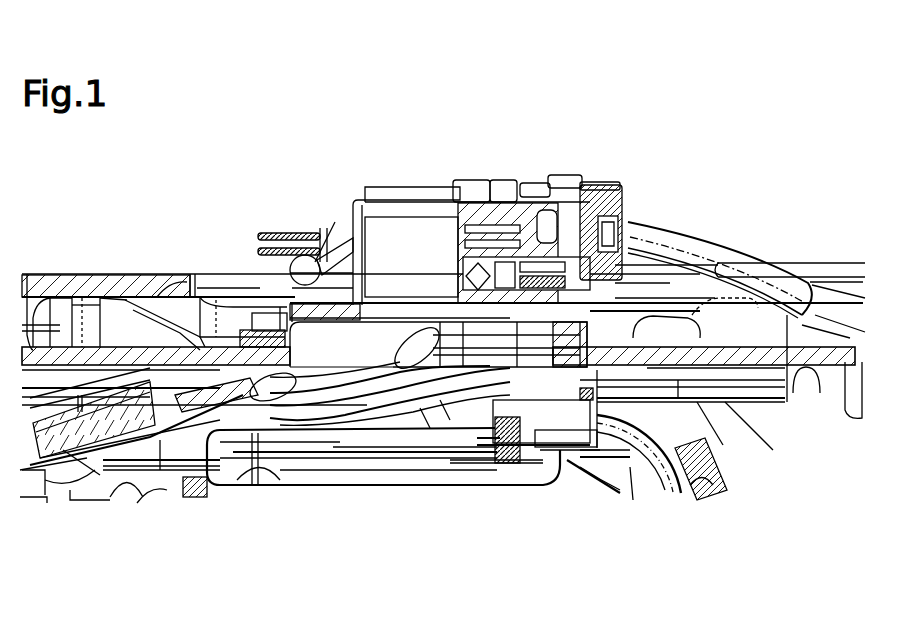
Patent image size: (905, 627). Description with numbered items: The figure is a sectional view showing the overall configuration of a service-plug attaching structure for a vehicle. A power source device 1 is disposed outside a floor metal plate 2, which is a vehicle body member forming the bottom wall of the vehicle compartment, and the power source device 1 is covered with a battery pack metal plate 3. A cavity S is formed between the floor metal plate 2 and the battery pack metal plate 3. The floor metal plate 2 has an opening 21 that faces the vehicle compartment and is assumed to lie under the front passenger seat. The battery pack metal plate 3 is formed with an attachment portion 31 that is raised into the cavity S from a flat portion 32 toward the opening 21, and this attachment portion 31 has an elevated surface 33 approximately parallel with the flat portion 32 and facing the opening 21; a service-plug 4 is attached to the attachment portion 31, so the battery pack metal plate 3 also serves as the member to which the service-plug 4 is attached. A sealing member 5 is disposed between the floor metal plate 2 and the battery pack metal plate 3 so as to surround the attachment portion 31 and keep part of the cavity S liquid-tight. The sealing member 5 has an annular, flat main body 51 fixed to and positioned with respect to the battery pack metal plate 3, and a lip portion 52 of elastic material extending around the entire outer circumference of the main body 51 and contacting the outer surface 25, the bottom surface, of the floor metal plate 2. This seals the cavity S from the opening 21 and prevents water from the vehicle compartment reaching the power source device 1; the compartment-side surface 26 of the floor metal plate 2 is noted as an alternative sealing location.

The power source device 1 is at (563, 498).
The floor metal plate 2 is at (168, 276).
The battery pack metal plate 3 is at (27, 273).
The service-plug 4 is at (503, 172).
The sealing member 5 is at (733, 188).
The opening 21 is at (222, 276).
The outer surface 25 is at (67, 302).
The compartment-side surface 26 is at (60, 272).
The attachment portion 31 is at (248, 272).
The flat portion 32 is at (93, 340).
The elevated surface 33 is at (330, 243).
The main body 51 is at (633, 335).
The lip portion 52 is at (688, 315).
The cavity S is at (115, 302).